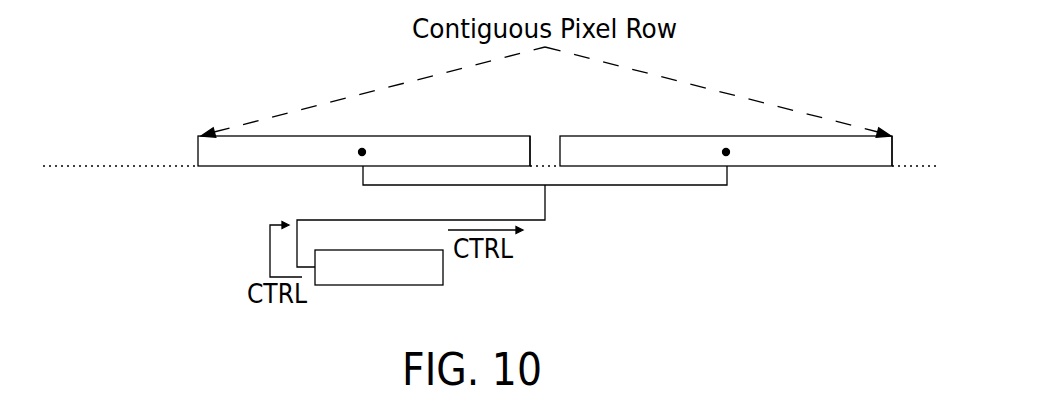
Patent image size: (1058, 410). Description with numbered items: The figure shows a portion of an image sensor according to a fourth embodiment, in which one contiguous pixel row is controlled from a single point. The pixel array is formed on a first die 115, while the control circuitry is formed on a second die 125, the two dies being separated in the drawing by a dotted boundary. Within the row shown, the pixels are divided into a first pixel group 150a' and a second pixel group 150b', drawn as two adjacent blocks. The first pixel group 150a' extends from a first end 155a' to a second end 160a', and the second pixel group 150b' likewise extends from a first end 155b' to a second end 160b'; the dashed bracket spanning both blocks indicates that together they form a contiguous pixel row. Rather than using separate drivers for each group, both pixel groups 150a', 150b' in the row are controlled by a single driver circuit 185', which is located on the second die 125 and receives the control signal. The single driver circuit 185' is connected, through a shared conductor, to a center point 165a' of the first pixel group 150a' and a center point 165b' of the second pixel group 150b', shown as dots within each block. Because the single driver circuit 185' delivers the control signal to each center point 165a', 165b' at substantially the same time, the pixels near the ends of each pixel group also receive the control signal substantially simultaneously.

The first die 115 is at (83, 144).
The second die 125 is at (85, 216).
The first pixel group 150a' is at (373, 92).
The second pixel group 150b' is at (738, 92).
The first end of first pixel group 155a' is at (319, 141).
The first end of second pixel group 155b' is at (724, 126).
The second end of first pixel group 160a' is at (511, 126).
The second end of second pixel group 160b' is at (926, 137).
The center point of first pixel group 165a' is at (378, 124).
The center point of second pixel group 165b' is at (712, 126).
The single driver circuit 185' is at (379, 297).